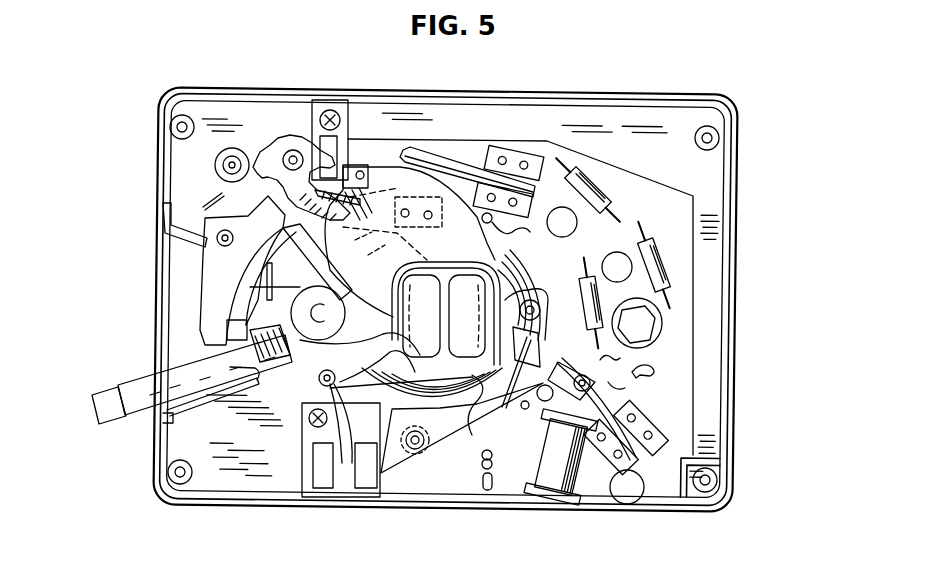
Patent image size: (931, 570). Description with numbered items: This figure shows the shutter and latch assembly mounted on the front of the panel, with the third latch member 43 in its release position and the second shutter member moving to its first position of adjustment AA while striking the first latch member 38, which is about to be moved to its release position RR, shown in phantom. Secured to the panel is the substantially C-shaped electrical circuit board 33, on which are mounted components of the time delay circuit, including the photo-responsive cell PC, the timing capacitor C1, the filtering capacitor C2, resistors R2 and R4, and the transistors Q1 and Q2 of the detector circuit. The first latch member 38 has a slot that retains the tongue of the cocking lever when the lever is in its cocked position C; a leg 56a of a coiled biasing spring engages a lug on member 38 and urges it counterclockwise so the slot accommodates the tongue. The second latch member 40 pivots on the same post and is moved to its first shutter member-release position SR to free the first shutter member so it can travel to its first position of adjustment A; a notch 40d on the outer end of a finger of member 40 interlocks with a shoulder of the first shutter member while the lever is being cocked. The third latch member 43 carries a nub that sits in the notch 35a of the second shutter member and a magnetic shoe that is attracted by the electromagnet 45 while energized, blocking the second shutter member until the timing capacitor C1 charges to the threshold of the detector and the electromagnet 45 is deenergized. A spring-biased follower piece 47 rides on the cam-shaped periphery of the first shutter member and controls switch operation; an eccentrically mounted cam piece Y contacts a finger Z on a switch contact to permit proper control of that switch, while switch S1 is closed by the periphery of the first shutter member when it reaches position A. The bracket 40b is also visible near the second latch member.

The electrical circuit board 33 is at (484, 134).
The first shutter member-release position SR is at (310, 134).
The second latch member 40 is at (274, 140).
The lever bracket 40b is at (330, 162).
The notch 40d is at (382, 234).
The leg of coiled biasing spring 56a is at (208, 199).
The first latch member 38 is at (222, 255).
The release position RR is at (275, 287).
The mechanically actuated switch S1 is at (438, 150).
The first position of adjustment A is at (507, 228).
The first position of adjustment AA is at (472, 302).
The follower piece 47 is at (537, 357).
The finger Z is at (614, 358).
The eccentrically mounted cam piece Y is at (625, 392).
The resistor R2 is at (583, 182).
The transistor Q2 is at (566, 220).
The resistor R4 is at (658, 262).
The transistor Q1 is at (621, 270).
The photo-responsive cell PC is at (643, 328).
The timing capacitor C1 is at (650, 370).
The filtering capacitor C2 is at (626, 503).
The third latch member 43 is at (462, 448).
The notch 35a is at (495, 432).
The electromagnet 45 is at (540, 464).
The cocked position C is at (93, 405).